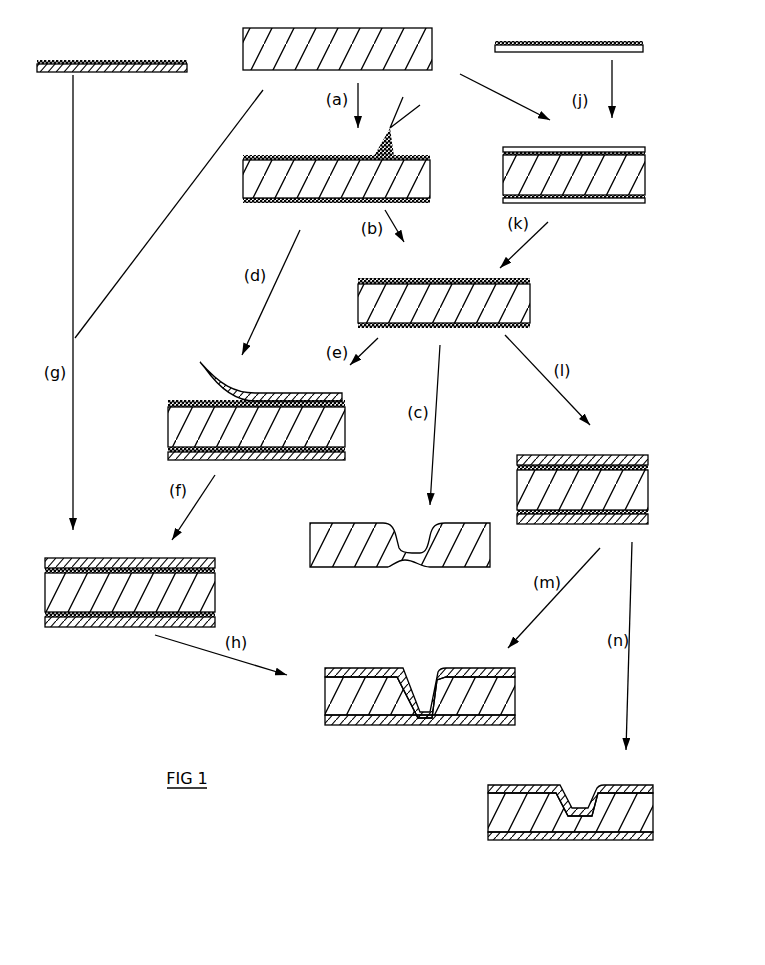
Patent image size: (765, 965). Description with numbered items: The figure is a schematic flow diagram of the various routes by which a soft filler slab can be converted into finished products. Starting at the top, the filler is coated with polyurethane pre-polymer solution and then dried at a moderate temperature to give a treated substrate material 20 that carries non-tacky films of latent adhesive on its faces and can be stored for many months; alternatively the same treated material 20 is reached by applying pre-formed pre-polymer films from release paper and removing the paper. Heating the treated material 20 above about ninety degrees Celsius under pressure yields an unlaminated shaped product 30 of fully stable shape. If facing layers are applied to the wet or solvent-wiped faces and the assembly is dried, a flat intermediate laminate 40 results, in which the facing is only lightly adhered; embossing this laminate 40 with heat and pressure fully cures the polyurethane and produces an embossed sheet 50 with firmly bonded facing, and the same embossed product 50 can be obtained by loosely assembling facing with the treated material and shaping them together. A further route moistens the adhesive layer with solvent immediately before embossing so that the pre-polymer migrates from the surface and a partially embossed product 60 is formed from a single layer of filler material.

The treated substrate material 20 is at (444, 305).
The unlaminated shaped product 30 is at (416, 522).
The flat intermediate laminate 40 is at (149, 589).
The embossed sheet 50 is at (431, 695).
The grooved laminated body with shallow groove 60 is at (586, 811).